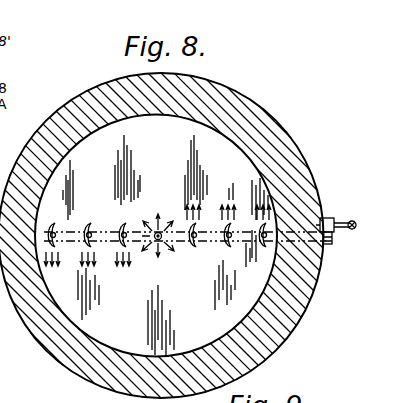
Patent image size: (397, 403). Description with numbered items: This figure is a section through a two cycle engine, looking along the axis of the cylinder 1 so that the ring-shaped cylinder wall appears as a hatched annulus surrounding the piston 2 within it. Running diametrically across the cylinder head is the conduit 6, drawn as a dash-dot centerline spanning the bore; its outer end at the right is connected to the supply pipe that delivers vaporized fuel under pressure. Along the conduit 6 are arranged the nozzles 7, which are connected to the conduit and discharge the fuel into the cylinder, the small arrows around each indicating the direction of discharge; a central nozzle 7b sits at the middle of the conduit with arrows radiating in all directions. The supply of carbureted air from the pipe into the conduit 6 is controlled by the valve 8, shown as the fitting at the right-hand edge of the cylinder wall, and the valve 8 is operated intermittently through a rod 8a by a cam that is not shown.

The cylinder 1 is at (284, 337).
The piston 2 is at (156, 236).
The diametrical conduit 6 is at (155, 245).
The nozzles 7 is at (119, 226).
The central nozzle 7b is at (158, 226).
The valve 8 is at (328, 219).
The rod 8a is at (0, 352).